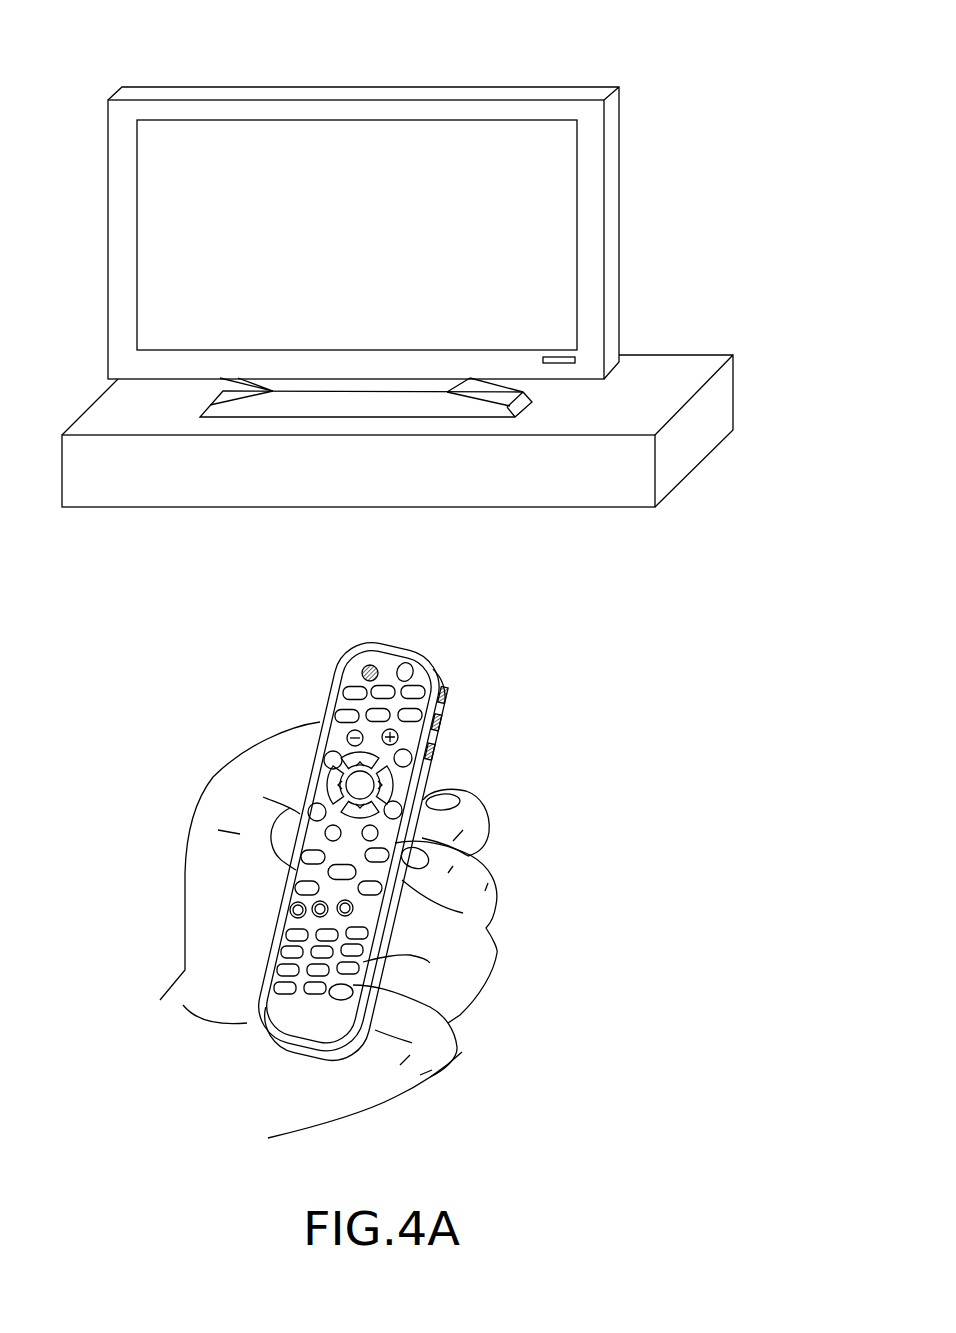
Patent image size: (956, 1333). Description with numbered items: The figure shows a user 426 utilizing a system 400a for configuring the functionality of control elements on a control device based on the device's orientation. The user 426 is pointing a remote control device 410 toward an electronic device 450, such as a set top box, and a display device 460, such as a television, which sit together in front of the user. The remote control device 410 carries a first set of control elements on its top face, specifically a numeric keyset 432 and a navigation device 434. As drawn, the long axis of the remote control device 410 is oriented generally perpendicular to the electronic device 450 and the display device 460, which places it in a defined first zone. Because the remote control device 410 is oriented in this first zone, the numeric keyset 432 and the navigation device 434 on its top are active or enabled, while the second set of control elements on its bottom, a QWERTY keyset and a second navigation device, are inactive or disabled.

The system 400a is at (718, 109).
The display device 460 is at (392, 137).
The electronic device 450 is at (682, 462).
The remote control device 410 is at (430, 650).
The navigation device 434 is at (368, 786).
The numeric keyset 432 is at (292, 950).
The user 426 is at (488, 865).